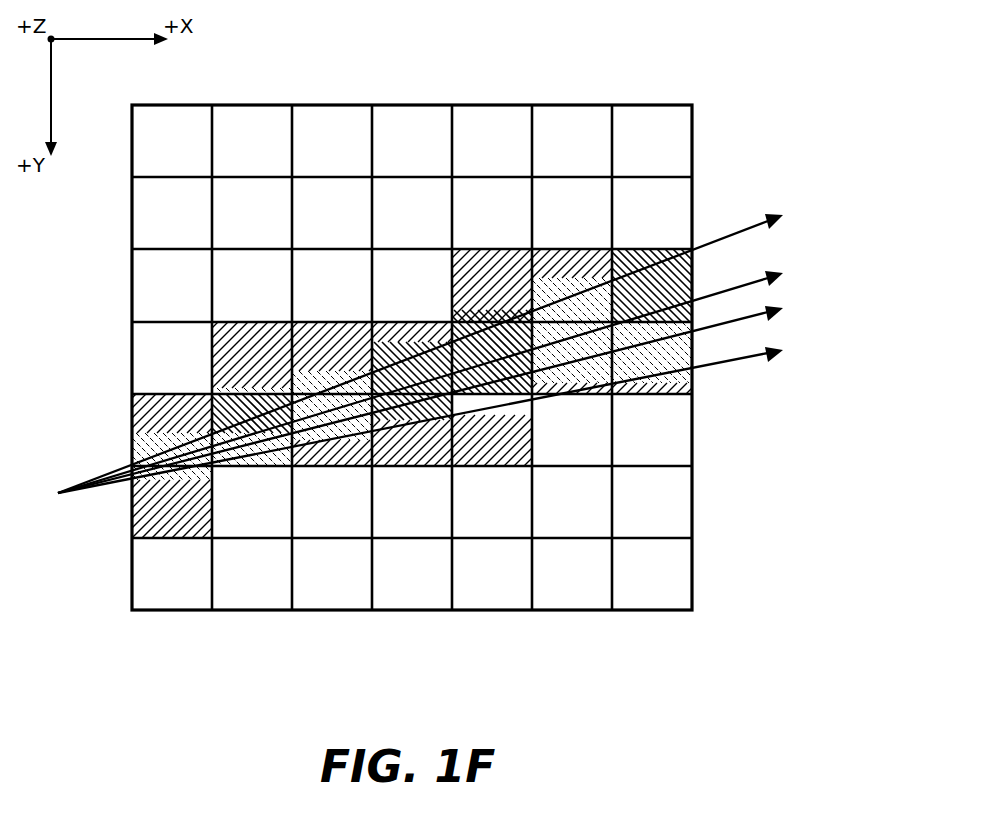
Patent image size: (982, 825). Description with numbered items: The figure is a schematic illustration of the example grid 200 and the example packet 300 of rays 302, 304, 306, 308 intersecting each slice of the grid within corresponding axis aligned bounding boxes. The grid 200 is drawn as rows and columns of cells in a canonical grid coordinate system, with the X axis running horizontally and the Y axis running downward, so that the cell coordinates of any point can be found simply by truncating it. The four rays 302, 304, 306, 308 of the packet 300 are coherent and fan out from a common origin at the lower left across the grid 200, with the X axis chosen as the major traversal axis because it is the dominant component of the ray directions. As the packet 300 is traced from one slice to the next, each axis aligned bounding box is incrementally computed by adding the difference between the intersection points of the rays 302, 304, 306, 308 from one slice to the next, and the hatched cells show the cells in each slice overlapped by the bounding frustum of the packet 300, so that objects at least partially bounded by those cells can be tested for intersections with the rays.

The pixel grid 200 is at (697, 143).
The packet 300 is at (845, 200).
The ray 302 is at (768, 220).
The ray 304 is at (761, 271).
The ray 306 is at (761, 306).
The ray 308 is at (761, 344).